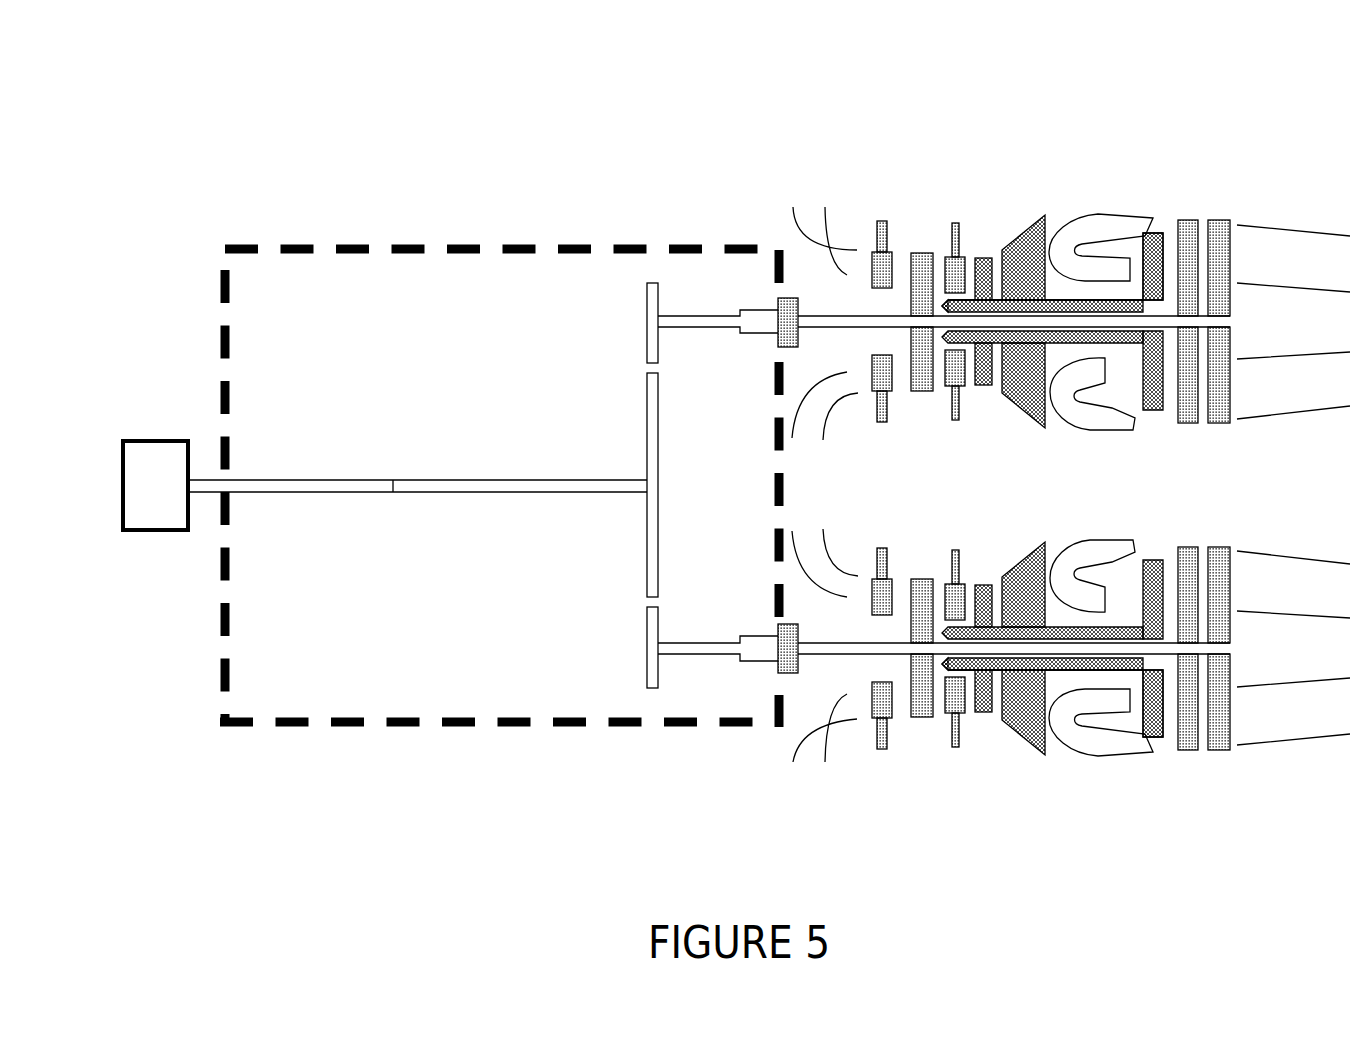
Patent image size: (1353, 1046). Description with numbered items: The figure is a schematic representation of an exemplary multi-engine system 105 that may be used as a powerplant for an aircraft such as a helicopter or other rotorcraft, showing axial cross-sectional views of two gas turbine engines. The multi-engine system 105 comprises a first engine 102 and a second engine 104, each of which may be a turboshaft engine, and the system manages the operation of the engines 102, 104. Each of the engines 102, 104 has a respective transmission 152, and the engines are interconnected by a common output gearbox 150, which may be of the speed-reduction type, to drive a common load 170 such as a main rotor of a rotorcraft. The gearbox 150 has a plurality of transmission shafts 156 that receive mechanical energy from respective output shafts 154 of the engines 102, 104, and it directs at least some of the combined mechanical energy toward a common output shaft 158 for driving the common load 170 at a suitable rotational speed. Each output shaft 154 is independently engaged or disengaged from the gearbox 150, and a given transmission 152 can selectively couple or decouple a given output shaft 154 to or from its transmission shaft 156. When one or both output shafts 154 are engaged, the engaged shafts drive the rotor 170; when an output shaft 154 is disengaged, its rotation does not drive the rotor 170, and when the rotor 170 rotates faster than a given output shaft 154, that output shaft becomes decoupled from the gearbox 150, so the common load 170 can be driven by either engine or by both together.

The multi-engine system 105 is at (296, 166).
The first engine 102 is at (1144, 166).
The second engine 104 is at (1144, 804).
The common output gearbox 150 is at (457, 726).
The common load 170 is at (157, 440).
The common output shaft 158 is at (207, 493).
The transmission shaft 156 is at (702, 314).
The output shaft 154 is at (832, 315).
The transmission 152 is at (758, 350).